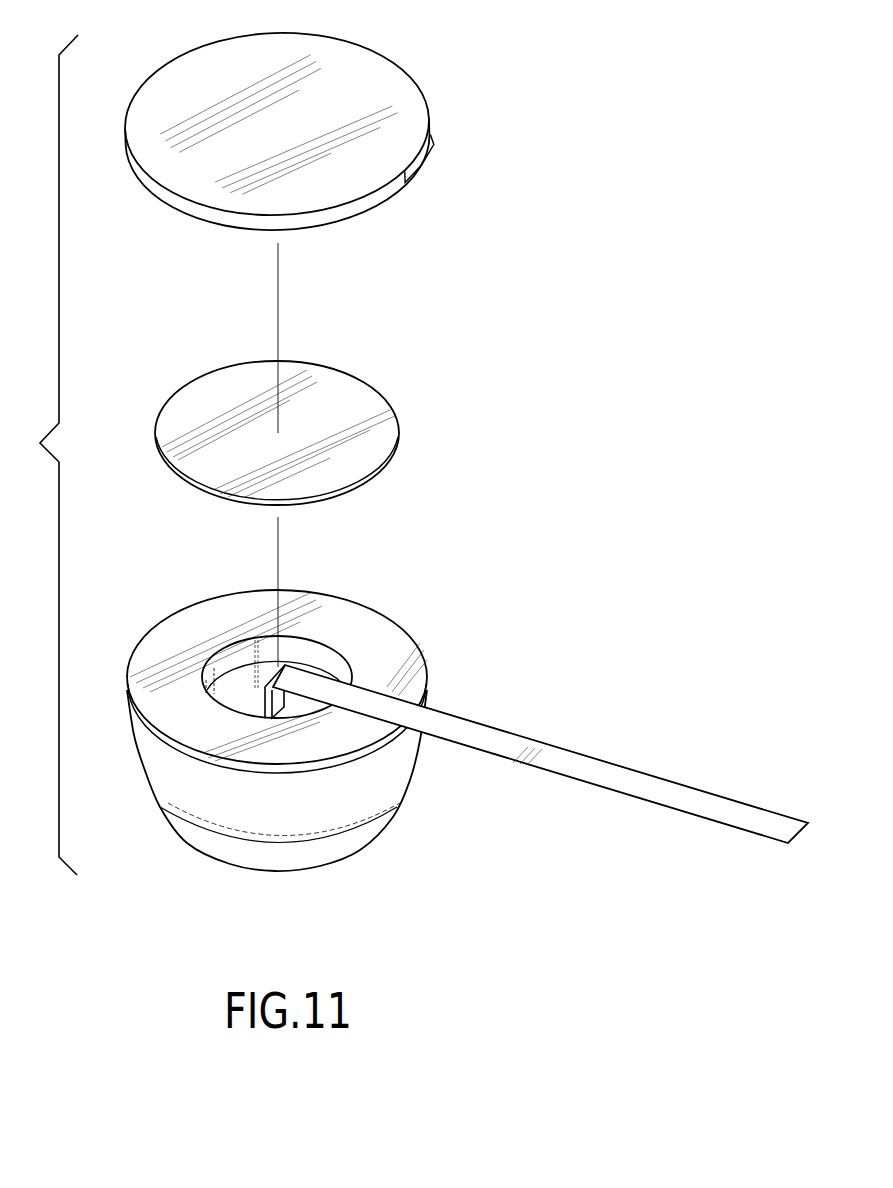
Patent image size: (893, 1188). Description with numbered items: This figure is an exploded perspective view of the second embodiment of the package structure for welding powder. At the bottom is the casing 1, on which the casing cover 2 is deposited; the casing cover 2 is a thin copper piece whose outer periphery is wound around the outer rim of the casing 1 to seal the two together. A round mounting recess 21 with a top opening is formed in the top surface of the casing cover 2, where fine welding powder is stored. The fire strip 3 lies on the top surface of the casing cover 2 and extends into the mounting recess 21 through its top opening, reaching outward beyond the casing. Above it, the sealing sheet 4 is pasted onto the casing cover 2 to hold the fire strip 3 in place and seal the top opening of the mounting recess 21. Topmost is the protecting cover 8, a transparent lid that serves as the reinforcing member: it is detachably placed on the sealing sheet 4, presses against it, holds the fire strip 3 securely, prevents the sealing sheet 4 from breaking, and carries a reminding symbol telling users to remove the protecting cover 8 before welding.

The casing 1 is at (375, 847).
The casing cover 2 is at (355, 623).
The mounting recess 21 is at (243, 660).
The fire strip 3 is at (585, 766).
The sealing sheet 4 is at (217, 393).
The protecting cover 8 is at (188, 77).